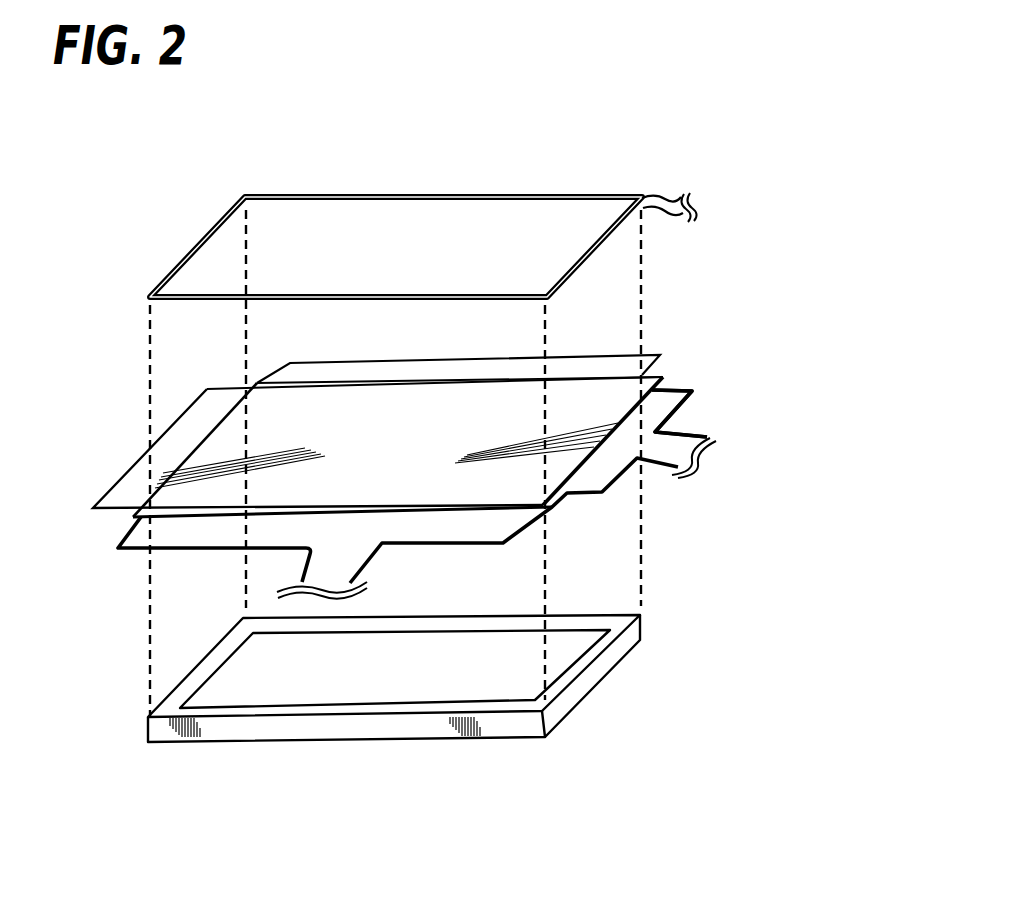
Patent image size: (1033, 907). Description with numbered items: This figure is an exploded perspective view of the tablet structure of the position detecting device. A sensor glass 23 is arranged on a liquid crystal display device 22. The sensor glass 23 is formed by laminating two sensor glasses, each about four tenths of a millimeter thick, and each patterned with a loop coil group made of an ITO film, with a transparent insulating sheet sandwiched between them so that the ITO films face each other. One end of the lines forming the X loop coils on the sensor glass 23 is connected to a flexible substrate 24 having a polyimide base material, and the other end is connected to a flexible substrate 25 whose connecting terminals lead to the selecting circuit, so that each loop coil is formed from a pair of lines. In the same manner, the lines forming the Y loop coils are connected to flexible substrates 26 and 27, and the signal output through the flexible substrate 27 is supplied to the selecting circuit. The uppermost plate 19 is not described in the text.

The transparent top electrode plate 19 is at (470, 196).
The flexible substrate 24 is at (627, 362).
The flexible substrate 26 is at (133, 483).
The sensor glass 23 is at (347, 472).
The flexible substrate 25 is at (142, 537).
The flexible substrate 27 is at (667, 398).
The liquid crystal display device 22 is at (567, 697).